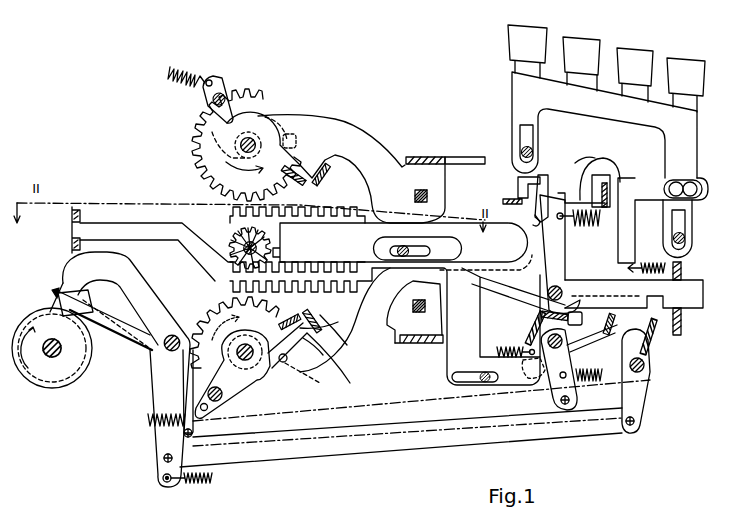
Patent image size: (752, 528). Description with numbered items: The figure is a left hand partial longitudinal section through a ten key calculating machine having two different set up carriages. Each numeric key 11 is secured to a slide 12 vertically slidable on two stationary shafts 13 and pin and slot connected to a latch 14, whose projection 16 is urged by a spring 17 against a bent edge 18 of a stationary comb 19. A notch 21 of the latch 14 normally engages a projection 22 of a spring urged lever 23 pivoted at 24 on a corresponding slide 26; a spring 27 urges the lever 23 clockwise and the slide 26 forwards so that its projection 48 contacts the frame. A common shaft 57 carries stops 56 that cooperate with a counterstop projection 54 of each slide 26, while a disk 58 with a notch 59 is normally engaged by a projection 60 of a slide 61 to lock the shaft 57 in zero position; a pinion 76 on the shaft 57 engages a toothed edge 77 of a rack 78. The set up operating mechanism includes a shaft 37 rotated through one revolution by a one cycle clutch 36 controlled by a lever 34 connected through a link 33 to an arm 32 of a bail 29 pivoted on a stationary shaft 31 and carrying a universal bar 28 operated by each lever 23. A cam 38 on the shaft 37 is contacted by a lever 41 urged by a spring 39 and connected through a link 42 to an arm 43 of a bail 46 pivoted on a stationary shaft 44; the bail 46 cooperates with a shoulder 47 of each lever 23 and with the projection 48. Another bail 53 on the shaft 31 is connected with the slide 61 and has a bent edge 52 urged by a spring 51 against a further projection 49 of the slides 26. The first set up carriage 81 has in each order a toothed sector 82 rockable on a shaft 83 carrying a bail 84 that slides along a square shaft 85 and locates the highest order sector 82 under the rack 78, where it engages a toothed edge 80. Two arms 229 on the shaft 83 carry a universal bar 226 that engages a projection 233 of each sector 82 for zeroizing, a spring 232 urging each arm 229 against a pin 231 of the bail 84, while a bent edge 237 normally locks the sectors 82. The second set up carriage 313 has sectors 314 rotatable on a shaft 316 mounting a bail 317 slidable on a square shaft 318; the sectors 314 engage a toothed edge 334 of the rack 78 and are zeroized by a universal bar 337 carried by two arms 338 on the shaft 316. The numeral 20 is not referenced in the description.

The numeric key 11 is at (548, 31).
The slide 12 is at (581, 114).
The stationary shaft 13 is at (520, 150).
The latch 14 is at (647, 178).
The projection 16 is at (580, 163).
The spring 17 is at (650, 263).
The bent edge 18 is at (606, 160).
The stationary comb 19 is at (500, 203).
The hook 20 is at (533, 221).
The notch 21 is at (548, 196).
The projection 22 is at (518, 195).
The lever 23 is at (555, 262).
The pivot 24 is at (562, 288).
The slide 26 is at (512, 282).
The spring 27 is at (586, 228).
The universal bar 28 is at (616, 324).
The bail 29 is at (613, 335).
The stationary shaft 31 is at (568, 345).
The arm 32 is at (560, 412).
The link 33 is at (401, 406).
The lever 34 is at (180, 392).
The one cycle clutch 36 is at (55, 288).
The shaft 37 is at (53, 360).
The cam 38 is at (50, 297).
The spring 39 is at (203, 484).
The lever 41 is at (120, 278).
The link 42 is at (385, 449).
The arm 43 is at (644, 366).
The stationary shaft 44 is at (642, 375).
The bail 46 is at (655, 355).
The shoulder 47 is at (660, 292).
The projection 48 is at (681, 336).
The projection 49 is at (578, 312).
The spring 51 is at (508, 360).
The bent edge 52 is at (540, 314).
The bail 53 is at (525, 330).
The projection 54 is at (313, 313).
The stop 56 is at (228, 234).
The shaft 57 is at (240, 252).
The disk 58 is at (291, 314).
The notch 59 is at (276, 224).
The projection 60 is at (296, 224).
The slide 61 is at (323, 224).
The pinion 76 is at (233, 283).
The toothed edge 77 is at (340, 285).
The rack 78 is at (140, 230).
The toothed edge 80 is at (268, 335).
The set up carriage 81 is at (272, 387).
The toothed sector 82 is at (200, 316).
The shaft 83 is at (236, 352).
The bail 84 is at (418, 345).
The square shaft 85 is at (395, 343).
The universal bar 226 is at (223, 385).
The arm 229 is at (222, 394).
The pin 231 is at (305, 378).
The spring 232 is at (147, 420).
The projection 233 is at (323, 344).
The bent edge 237 is at (338, 328).
The second set up carriage 313 is at (270, 107).
The sector 314 is at (194, 152).
The shaft 316 is at (256, 140).
The bail 317 is at (448, 157).
The square shaft 318 is at (415, 157).
The toothed edge 334 is at (366, 205).
The universal bar 337 is at (252, 113).
The arm 338 is at (233, 113).